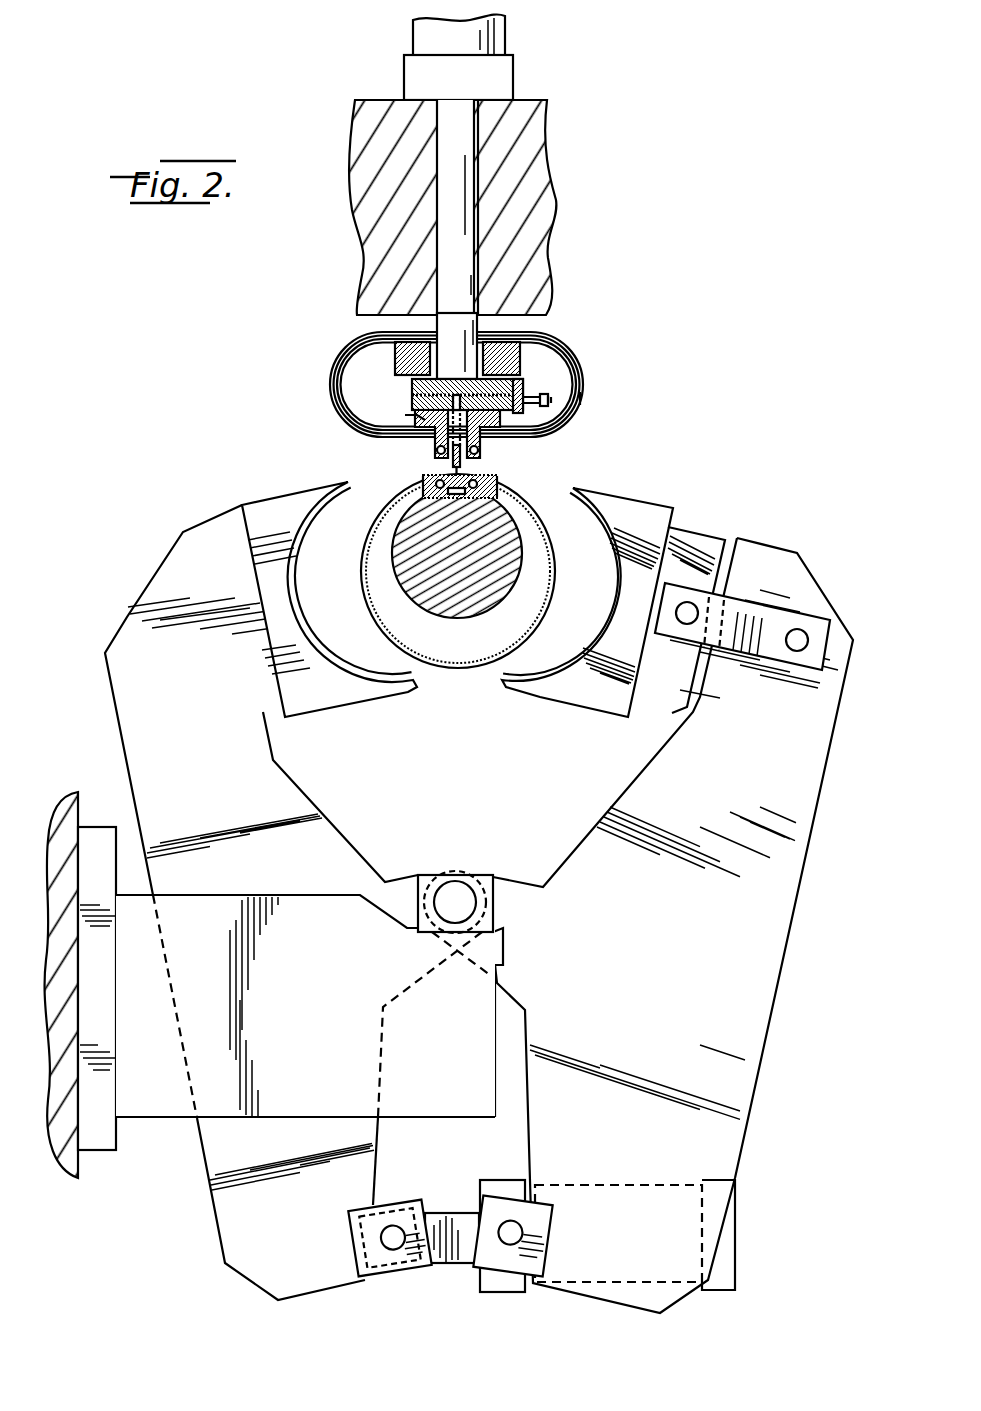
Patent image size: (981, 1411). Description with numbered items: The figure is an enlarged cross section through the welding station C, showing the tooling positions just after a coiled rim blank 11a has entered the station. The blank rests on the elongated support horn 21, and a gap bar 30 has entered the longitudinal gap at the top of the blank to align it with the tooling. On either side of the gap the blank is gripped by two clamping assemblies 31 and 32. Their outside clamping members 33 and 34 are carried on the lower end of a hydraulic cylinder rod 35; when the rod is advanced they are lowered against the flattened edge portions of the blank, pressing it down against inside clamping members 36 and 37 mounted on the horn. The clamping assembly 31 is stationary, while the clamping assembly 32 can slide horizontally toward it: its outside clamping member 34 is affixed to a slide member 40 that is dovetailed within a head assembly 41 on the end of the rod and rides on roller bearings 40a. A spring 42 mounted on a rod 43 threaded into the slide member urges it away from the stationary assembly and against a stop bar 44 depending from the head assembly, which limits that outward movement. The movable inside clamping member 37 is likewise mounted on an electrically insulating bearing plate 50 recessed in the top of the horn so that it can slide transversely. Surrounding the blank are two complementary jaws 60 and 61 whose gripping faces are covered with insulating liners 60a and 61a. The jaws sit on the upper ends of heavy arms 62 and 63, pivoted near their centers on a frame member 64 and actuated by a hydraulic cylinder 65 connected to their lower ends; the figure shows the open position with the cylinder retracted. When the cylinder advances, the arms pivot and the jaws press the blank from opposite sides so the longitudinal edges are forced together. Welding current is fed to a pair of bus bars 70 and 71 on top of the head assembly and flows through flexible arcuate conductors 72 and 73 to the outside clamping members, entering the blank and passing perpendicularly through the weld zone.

The welding station C is at (607, 138).
The rim blank 11a is at (362, 568).
The support horn 21 is at (462, 616).
The gap bar 30 is at (462, 472).
The clamping assembly 31 is at (479, 411).
The clamping assembly 32 is at (582, 402).
The outside clamping member 33 is at (435, 445).
The outside clamping member 34 is at (497, 445).
The hydraulic cylinder rod 35 is at (477, 253).
The inside clamping member 36 is at (423, 478).
The inside clamping member 37 is at (497, 478).
The slide member 40 is at (469, 378).
The roller bearings 40a is at (560, 372).
The head assembly 41 is at (412, 400).
The spring 42 is at (548, 400).
The rod 43 is at (555, 410).
The stop bar 44 is at (523, 390).
The bearing plate 50 is at (505, 495).
The jaw 60 is at (277, 503).
The insulating liner 60a is at (297, 582).
The jaw 61 is at (670, 510).
The insulating liner 61a is at (585, 638).
The arm 62 is at (125, 617).
The arm 63 is at (797, 568).
The frame member 64 is at (432, 875).
The hydraulic cylinder 65 is at (480, 1183).
The bus bar 70 is at (395, 352).
The bus bar 71 is at (520, 350).
The flexible arcuate conductor 72 is at (338, 386).
The flexible arcuate conductor 73 is at (565, 352).